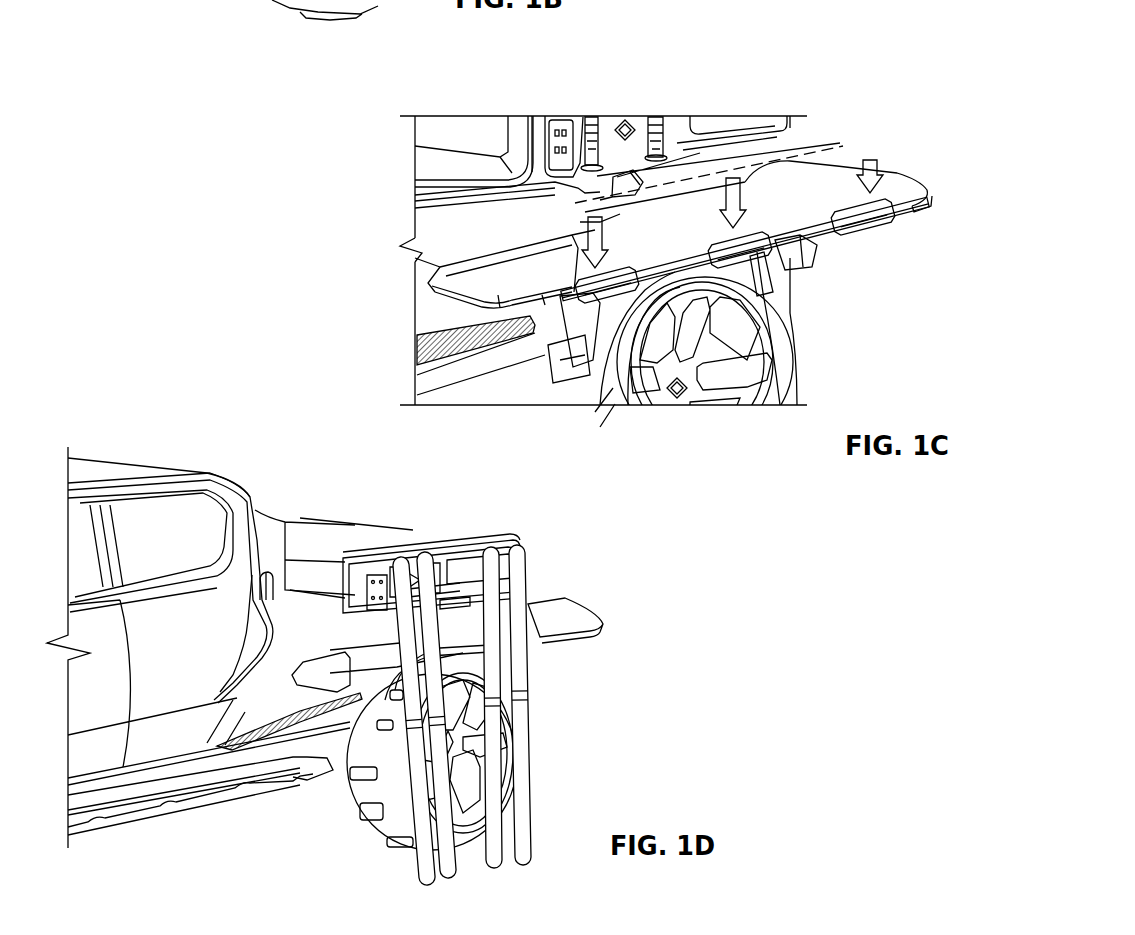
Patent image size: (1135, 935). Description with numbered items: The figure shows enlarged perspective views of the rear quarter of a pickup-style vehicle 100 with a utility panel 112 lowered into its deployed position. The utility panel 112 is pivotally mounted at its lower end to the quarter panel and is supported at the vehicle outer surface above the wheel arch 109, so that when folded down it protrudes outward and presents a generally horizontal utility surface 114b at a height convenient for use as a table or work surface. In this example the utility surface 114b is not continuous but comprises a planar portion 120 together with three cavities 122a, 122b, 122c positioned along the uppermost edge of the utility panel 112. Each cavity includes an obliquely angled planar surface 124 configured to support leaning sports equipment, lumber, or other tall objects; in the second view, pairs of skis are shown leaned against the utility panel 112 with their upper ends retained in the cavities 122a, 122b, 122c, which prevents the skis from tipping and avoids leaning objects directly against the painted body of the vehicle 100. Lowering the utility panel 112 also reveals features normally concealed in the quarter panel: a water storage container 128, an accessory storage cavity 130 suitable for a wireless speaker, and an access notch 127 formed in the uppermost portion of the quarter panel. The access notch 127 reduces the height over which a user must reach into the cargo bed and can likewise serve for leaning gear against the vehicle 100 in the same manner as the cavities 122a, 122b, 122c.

In FIG. 1C, the vehicle 100 is at (855, 17).
In FIG. 1D, the vehicle 100 is at (119, 416).
In FIG. 1C, the wheel arch 109 is at (606, 195).
In FIG. 1D, the wheel arch 109 is at (442, 577).
In FIG. 1C, the utility panel 112 is at (826, 238).
In FIG. 1D, the utility panel 112 is at (572, 640).
In FIG. 1C, the utility surface 114b is at (900, 187).
In FIG. 1D, the utility surface 114b is at (563, 612).
In FIG. 1C, the planar portion 120 is at (698, 205).
In FIG. 1D, the planar portion 120 is at (462, 645).
In FIG. 1C, the cavity 122a is at (590, 278).
In FIG. 1C, the cavity 122b is at (726, 243).
In FIG. 1C, the cavity 122c is at (856, 211).
In FIG. 1C, the obliquely angled planar surface 124 is at (870, 210).
In FIG. 1C, the access notch 127 is at (470, 148).
In FIG. 1D, the access notch 127 is at (313, 582).
In FIG. 1C, the water storage container 128 is at (742, 126).
In FIG. 1D, the water storage container 128 is at (462, 565).
In FIG. 1C, the accessory storage cavity 130 is at (652, 122).
In FIG. 1D, the accessory storage cavity 130 is at (413, 590).